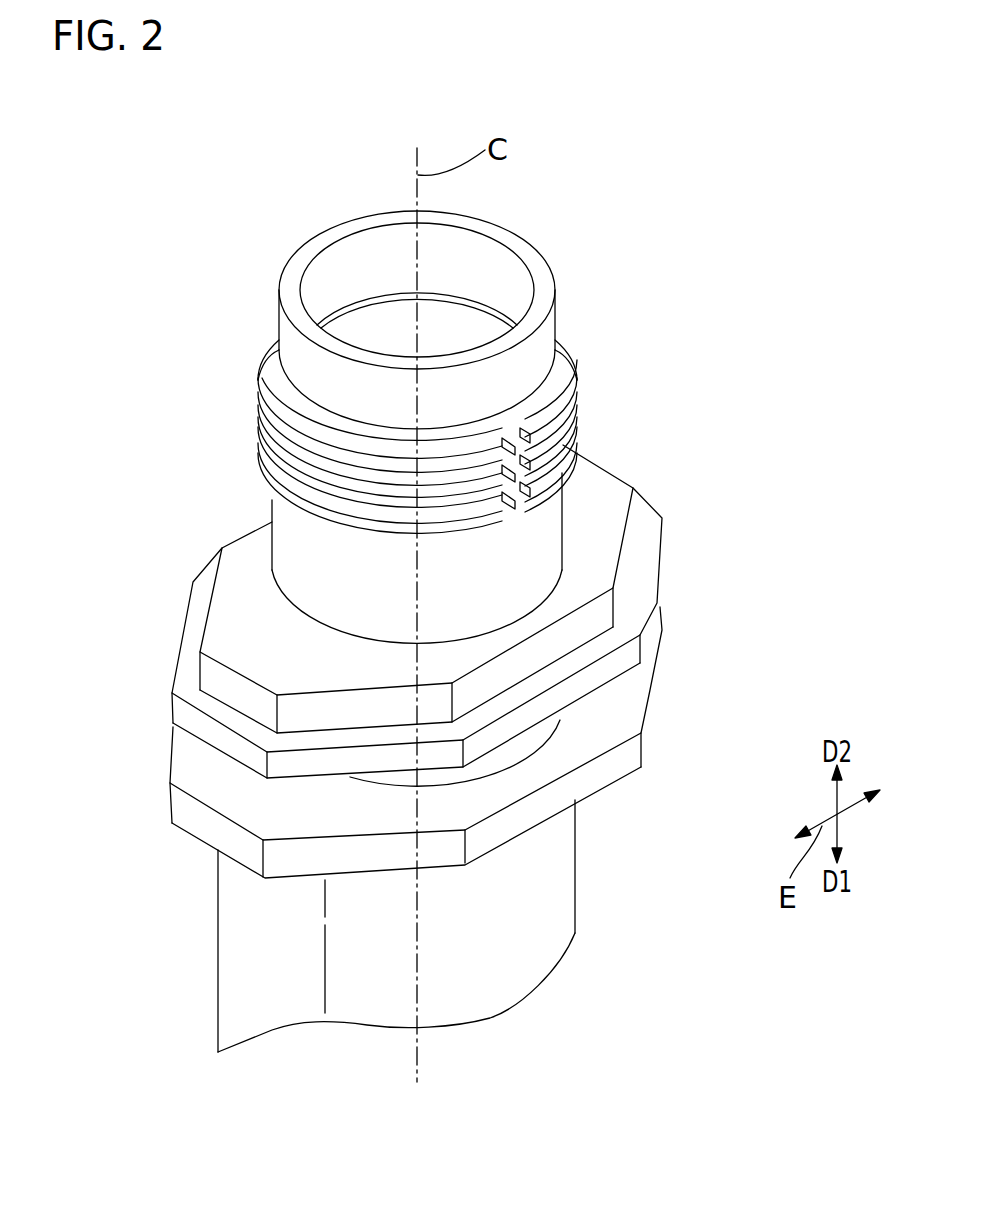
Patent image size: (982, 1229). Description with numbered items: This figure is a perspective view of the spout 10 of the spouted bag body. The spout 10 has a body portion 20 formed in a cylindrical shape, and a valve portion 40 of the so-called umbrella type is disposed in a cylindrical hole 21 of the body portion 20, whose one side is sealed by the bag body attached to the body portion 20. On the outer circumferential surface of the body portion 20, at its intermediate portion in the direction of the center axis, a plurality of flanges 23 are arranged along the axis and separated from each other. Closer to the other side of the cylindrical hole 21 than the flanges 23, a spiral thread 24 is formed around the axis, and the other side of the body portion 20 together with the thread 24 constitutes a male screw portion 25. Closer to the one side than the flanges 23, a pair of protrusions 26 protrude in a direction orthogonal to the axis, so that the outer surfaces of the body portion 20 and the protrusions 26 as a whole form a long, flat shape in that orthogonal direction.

The spout 10 is at (188, 266).
The body portion 20 is at (566, 308).
The cylindrical hole 21 is at (491, 266).
The valve portion 40 is at (378, 298).
The male screw portion 25 is at (588, 365).
The thread 24 is at (548, 443).
The flanges 23 is at (648, 530).
The protrusions 26 is at (597, 815).